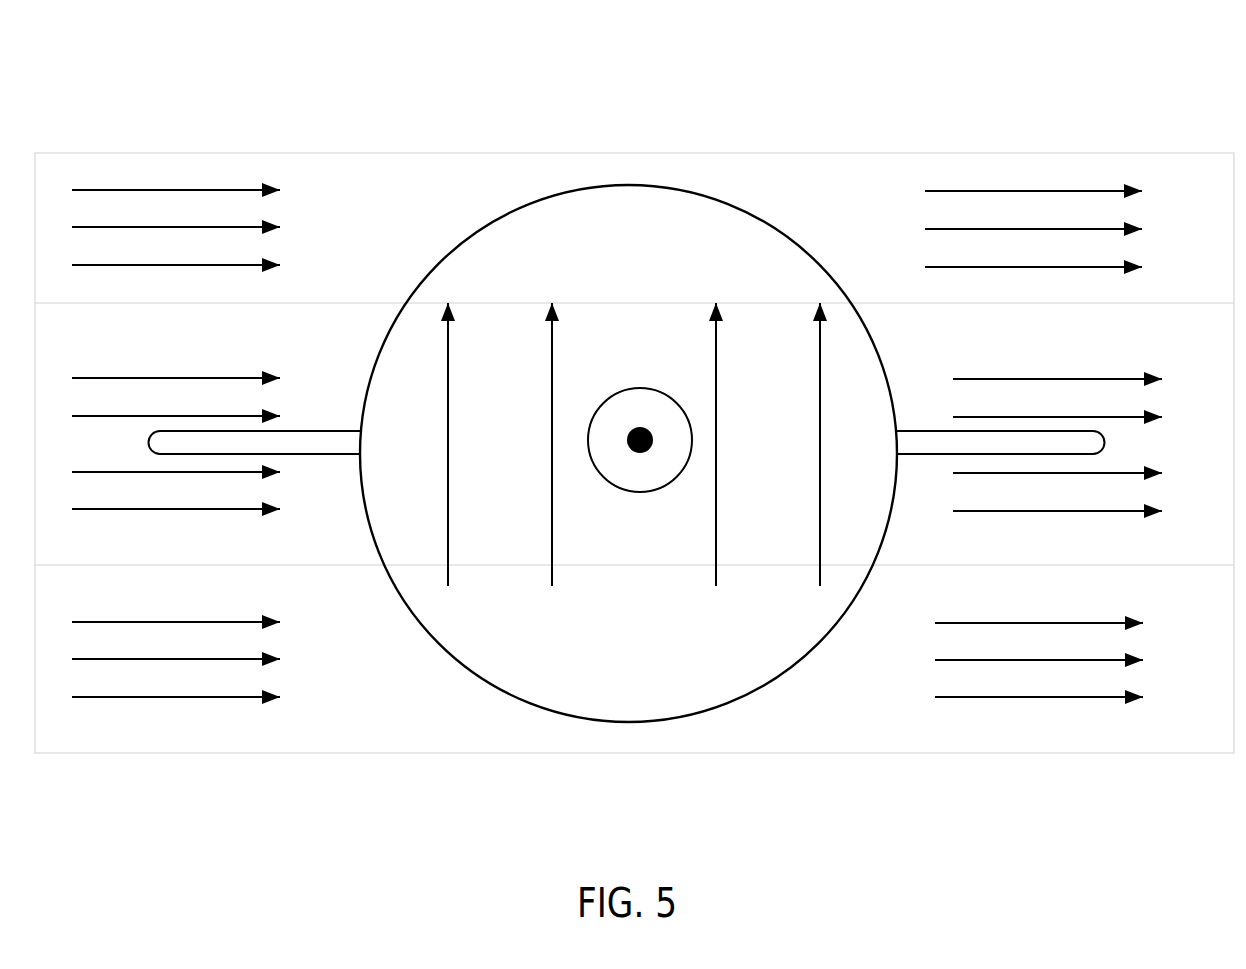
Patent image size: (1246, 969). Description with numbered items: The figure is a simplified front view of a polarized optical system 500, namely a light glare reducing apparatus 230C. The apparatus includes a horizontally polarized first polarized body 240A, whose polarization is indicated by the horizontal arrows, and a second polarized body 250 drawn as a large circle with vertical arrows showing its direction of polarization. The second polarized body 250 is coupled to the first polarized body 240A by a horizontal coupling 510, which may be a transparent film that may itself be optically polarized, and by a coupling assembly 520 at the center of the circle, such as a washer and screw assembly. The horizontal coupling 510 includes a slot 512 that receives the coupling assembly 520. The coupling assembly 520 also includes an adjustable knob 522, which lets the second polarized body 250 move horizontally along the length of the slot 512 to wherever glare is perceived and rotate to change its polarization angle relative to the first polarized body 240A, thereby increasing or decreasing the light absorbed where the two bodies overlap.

The polarized optical system 500 is at (265, 72).
The light glare reducing apparatus 230C is at (992, 153).
The first polarized body 240A is at (748, 734).
The second polarized body 250 is at (430, 275).
The horizontal coupling 510 is at (336, 303).
The slot 512 is at (210, 430).
The coupling assembly 520 is at (625, 440).
The adjustable knob 522 is at (640, 493).